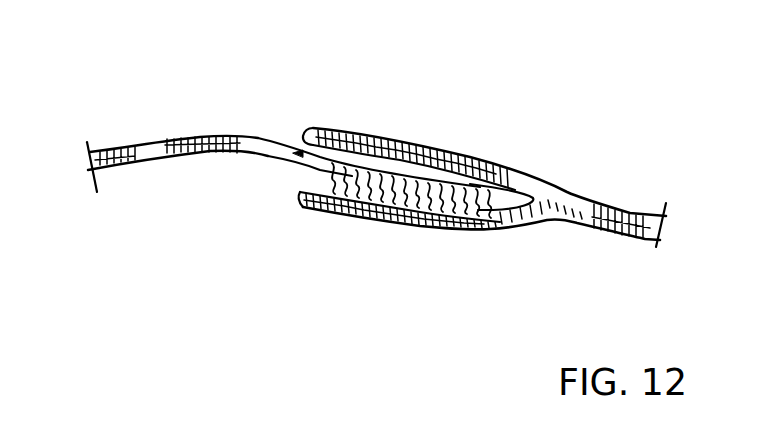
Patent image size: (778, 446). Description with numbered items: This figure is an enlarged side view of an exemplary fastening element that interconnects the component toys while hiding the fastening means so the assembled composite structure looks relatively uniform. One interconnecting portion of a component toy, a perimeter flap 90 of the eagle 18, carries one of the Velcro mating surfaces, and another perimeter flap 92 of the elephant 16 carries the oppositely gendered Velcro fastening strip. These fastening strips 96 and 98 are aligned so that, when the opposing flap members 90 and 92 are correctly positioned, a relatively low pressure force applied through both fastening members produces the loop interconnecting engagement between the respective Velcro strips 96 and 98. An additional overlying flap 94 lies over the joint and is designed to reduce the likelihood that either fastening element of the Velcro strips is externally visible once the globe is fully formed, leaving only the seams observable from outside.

The elephant 16 is at (152, 138).
The eagle 18 is at (608, 207).
The perimeter flap 90 is at (342, 213).
The perimeter flap 92 is at (360, 133).
The overlying flap 94 is at (447, 150).
The fastening strip 96 is at (323, 177).
The fastening strip 98 is at (255, 138).